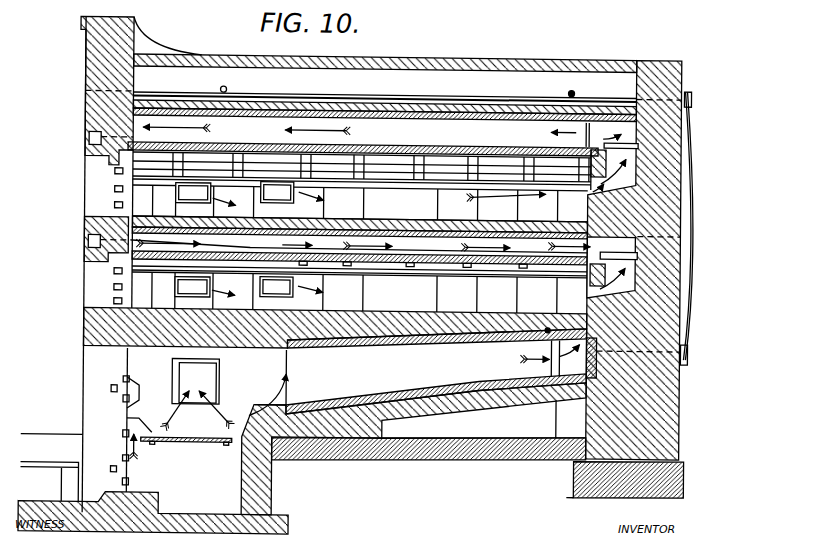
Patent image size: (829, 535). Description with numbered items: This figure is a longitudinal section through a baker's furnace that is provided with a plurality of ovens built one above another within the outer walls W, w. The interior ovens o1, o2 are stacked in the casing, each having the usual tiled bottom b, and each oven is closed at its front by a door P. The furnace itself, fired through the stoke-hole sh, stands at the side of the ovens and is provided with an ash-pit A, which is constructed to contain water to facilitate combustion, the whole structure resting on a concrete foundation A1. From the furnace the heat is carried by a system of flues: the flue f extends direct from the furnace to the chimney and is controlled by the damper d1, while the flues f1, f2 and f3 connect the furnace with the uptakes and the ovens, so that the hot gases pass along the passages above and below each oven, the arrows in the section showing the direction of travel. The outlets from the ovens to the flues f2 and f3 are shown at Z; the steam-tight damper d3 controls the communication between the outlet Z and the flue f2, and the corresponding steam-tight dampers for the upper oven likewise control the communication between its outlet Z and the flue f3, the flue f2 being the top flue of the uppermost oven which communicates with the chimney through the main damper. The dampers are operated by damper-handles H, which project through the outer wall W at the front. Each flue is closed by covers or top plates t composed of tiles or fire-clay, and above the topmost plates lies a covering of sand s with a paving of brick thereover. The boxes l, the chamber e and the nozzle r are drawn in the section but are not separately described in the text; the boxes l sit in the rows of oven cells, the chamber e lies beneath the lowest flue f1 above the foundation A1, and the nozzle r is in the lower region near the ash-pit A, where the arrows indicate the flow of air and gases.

The outer wall W is at (86, 58).
The outer wall w is at (677, 405).
The door P is at (82, 217).
The damper-handle H is at (88, 138).
The covering of sand s is at (384, 87).
The cover or top plate t is at (240, 116).
The flue f3 is at (382, 132).
The flue f2 is at (361, 247).
The flue f1 is at (414, 378).
The flue f is at (198, 392).
The damper d1 is at (637, 138).
The damper d3 is at (605, 250).
The outlet Z is at (611, 229).
The tiled bottom b is at (330, 226).
The box l is at (360, 241).
The interior oven o2 is at (413, 209).
The interior oven o1 is at (386, 302).
The base chamber e is at (484, 419).
The concrete foundation A1 is at (427, 459).
The ash-pit A is at (217, 463).
The nozzle r is at (155, 436).
The stoke-hole sh is at (51, 468).